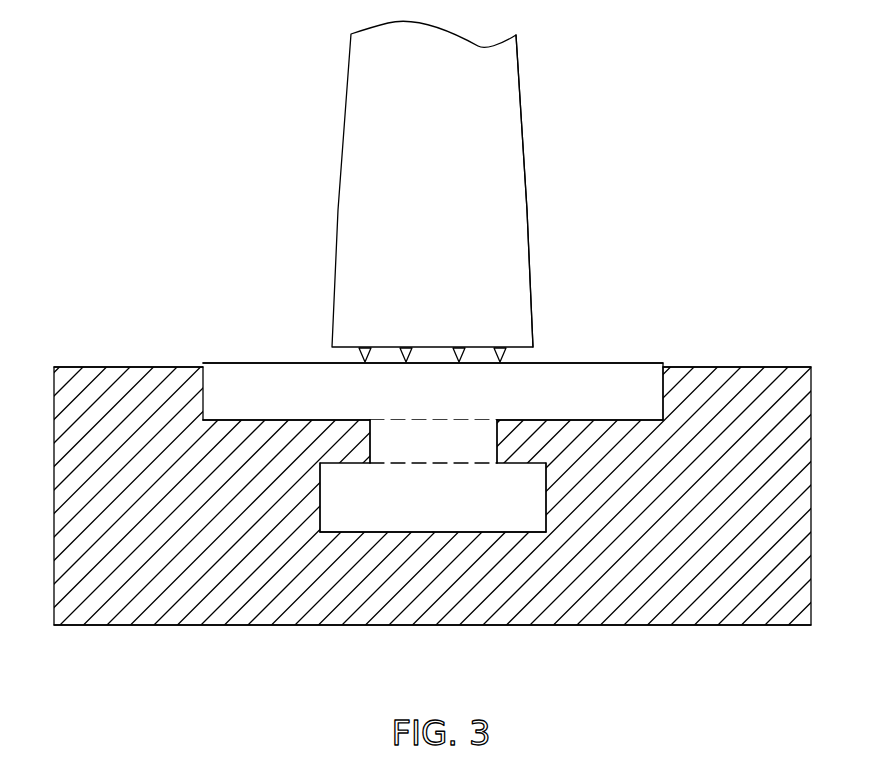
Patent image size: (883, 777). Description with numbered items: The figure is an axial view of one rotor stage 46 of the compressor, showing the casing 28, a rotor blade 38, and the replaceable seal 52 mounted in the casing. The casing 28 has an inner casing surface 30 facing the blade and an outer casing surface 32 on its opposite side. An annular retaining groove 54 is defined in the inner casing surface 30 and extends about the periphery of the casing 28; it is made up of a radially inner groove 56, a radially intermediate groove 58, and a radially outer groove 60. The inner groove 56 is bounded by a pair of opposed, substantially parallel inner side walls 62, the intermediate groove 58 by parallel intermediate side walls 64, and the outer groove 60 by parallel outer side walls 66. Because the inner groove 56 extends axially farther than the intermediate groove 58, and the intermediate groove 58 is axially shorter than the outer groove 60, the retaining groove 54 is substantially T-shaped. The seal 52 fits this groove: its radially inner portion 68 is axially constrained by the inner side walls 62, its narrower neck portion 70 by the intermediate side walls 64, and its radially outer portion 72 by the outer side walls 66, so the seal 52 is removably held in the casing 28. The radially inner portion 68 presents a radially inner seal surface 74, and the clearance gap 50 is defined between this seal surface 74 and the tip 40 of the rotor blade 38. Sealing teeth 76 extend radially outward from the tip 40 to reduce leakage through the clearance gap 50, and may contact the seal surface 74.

The casing 28 is at (795, 490).
The inner casing surface 30 is at (760, 368).
The outer casing surface 32 is at (718, 625).
The rotor blade 38 is at (415, 200).
The tip 40 is at (510, 232).
The rotor stage 46 is at (725, 162).
The clearance gap 50 is at (340, 355).
The seal 52 is at (222, 362).
The retaining groove 54 is at (340, 532).
The radially inner groove 56 is at (225, 420).
The radially intermediate groove 58 is at (498, 447).
The radially outer groove 60 is at (485, 532).
The inner side walls 62 is at (203, 390).
The intermediate side walls 64 is at (370, 430).
The outer side walls 66 is at (320, 485).
The radially inner portion 68 is at (428, 402).
The neck portion 70 is at (420, 449).
The radially outer portion 72 is at (428, 499).
The radially inner seal surface 74 is at (630, 363).
The sealing teeth 76 is at (505, 356).